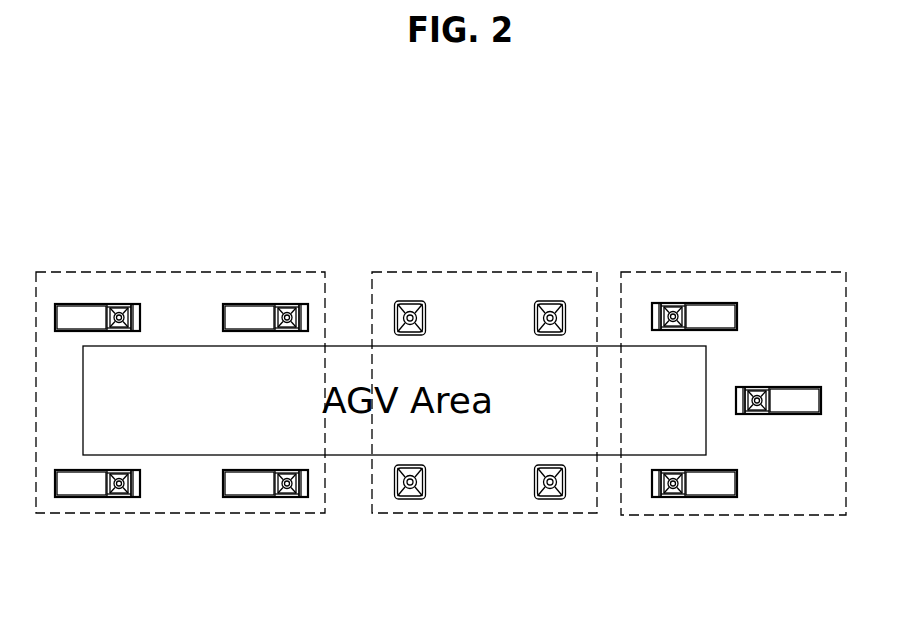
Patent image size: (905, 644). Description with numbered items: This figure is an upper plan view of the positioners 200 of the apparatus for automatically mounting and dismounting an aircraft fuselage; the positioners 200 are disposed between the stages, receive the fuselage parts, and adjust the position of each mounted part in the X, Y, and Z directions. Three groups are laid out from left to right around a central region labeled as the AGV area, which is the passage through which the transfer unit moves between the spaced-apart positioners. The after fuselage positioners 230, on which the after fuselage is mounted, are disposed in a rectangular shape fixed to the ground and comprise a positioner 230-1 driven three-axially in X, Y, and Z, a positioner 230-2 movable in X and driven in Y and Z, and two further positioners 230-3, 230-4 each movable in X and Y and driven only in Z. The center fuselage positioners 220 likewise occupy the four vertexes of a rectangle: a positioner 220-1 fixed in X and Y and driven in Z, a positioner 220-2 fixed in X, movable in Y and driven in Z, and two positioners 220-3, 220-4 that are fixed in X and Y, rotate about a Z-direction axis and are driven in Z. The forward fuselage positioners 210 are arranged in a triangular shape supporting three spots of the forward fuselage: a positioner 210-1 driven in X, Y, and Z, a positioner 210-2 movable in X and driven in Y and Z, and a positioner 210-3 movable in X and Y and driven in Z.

The positioners 200 is at (611, 170).
The forward fuselage positioners 210 is at (735, 272).
The first-1 positioner 210-1 is at (790, 387).
The first-2 positioner 210-2 is at (705, 303).
The first-3 positioner 210-3 is at (700, 498).
The center fuselage positioners 220 is at (485, 272).
The second-1 positioner 220-1 is at (547, 301).
The second-2 positioner 220-2 is at (547, 499).
The second-3 positioner 220-3 is at (407, 499).
The second-4 positioner 220-4 is at (409, 301).
The after fuselage positioners 230 is at (180, 272).
The third-1 positioner 230-1 is at (263, 304).
The third-2 positioner 230-2 is at (263, 498).
The third-3 positioner 230-3 is at (97, 498).
The third-4 positioner 230-4 is at (97, 304).